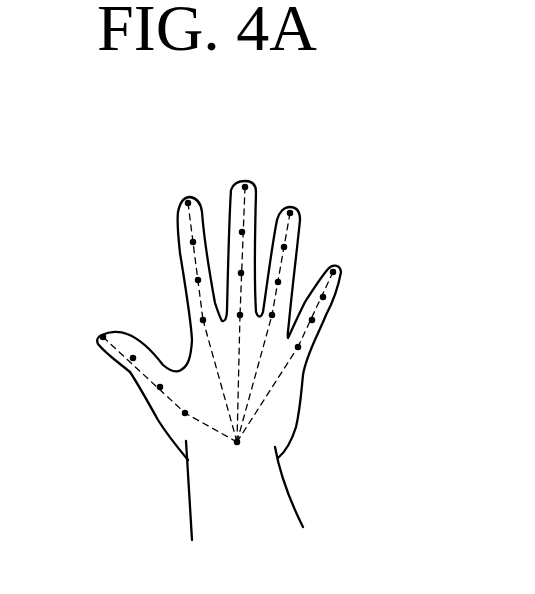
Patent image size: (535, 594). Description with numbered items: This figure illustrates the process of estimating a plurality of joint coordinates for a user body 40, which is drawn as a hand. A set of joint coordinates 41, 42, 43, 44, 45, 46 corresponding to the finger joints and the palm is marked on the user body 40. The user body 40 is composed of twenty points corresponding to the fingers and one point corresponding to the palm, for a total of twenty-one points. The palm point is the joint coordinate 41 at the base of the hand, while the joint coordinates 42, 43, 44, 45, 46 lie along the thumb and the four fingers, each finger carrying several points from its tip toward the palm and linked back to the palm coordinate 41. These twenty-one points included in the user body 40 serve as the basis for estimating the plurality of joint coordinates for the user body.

The user body 40 is at (152, 415).
The joint coordinate 41 is at (237, 446).
The joint coordinate 42 is at (103, 334).
The joint coordinate 43 is at (188, 200).
The joint coordinate 44 is at (245, 184).
The joint coordinate 45 is at (290, 210).
The joint coordinate 46 is at (333, 269).